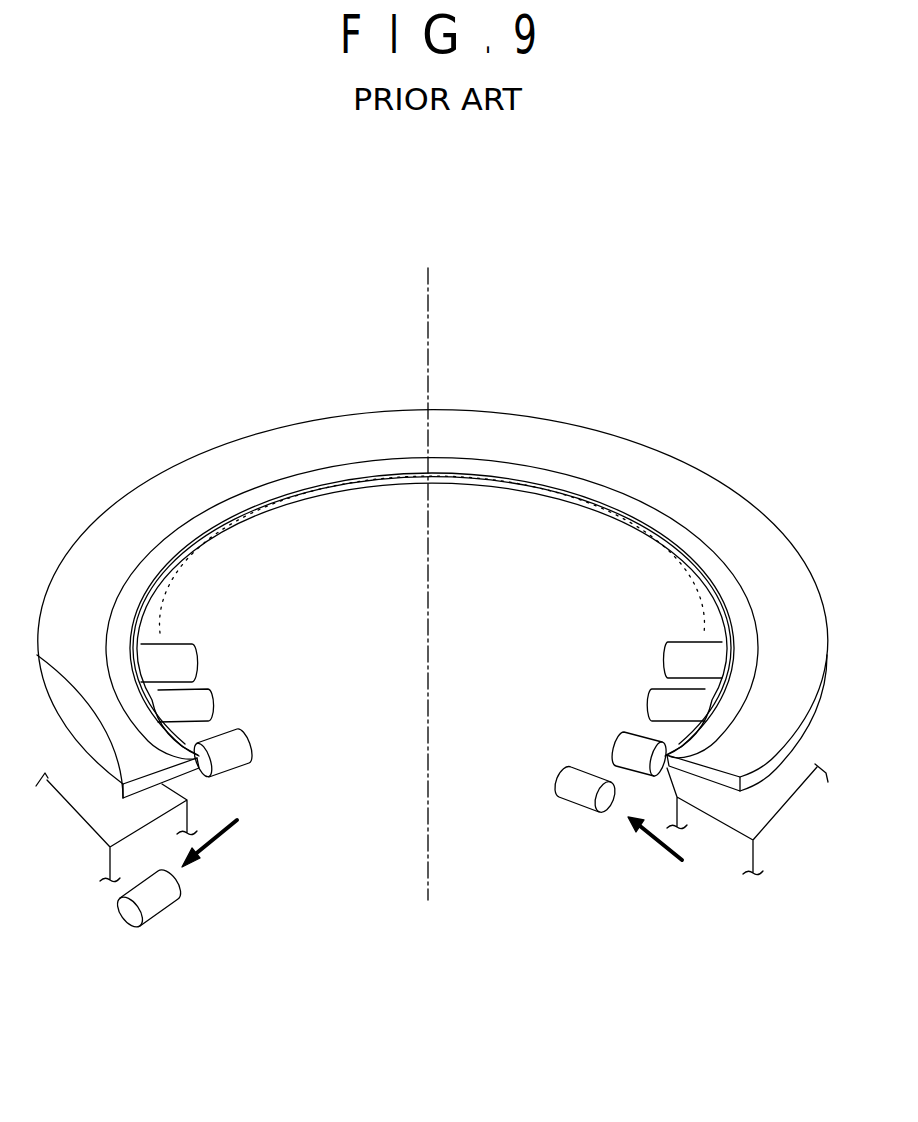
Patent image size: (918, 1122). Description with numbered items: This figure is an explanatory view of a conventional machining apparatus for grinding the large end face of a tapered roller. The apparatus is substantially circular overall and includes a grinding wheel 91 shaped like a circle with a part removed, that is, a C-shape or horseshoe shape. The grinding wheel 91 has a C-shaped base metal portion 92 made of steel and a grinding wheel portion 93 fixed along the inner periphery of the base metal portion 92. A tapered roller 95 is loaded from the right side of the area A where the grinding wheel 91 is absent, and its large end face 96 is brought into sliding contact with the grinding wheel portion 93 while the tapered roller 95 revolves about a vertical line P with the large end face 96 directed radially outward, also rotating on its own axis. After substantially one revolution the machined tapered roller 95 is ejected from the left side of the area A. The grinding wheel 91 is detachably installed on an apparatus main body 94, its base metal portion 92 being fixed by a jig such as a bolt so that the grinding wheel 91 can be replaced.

The grinding wheel 91 is at (130, 488).
The base metal portion 92 is at (103, 537).
The grinding wheel portion 93 is at (278, 507).
The apparatus main body 94 is at (758, 812).
The tapered roller 95 is at (235, 746).
The large end face 96 is at (205, 770).
The vertical line P is at (427, 313).
The area A is at (313, 852).